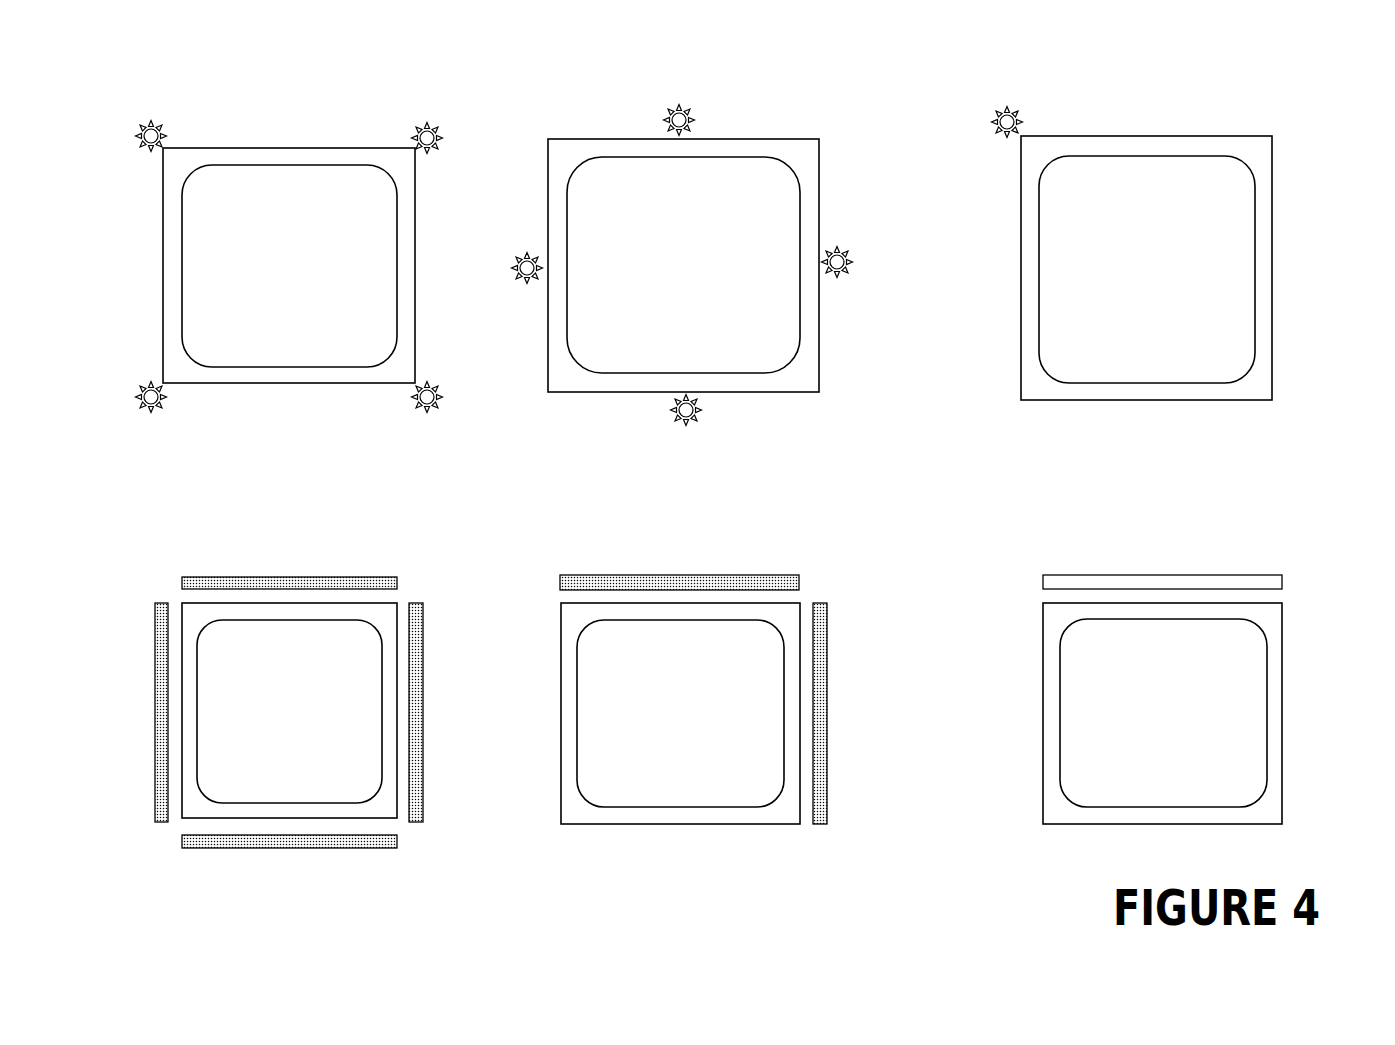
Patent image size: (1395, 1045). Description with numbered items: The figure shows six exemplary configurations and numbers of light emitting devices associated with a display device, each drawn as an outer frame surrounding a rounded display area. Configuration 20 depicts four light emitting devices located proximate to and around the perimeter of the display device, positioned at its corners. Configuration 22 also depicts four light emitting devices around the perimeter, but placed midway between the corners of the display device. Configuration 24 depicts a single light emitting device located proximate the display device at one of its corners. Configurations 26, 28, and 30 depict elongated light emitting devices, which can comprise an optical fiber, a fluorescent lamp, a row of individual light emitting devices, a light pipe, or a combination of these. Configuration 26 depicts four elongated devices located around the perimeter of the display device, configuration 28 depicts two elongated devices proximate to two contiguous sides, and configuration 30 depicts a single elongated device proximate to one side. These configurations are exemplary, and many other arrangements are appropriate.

The configuration 20 is at (457, 117).
The configuration 22 is at (840, 128).
The configuration 24 is at (1307, 128).
The configuration 26 is at (413, 573).
The configuration 28 is at (825, 563).
The configuration 30 is at (1305, 563).